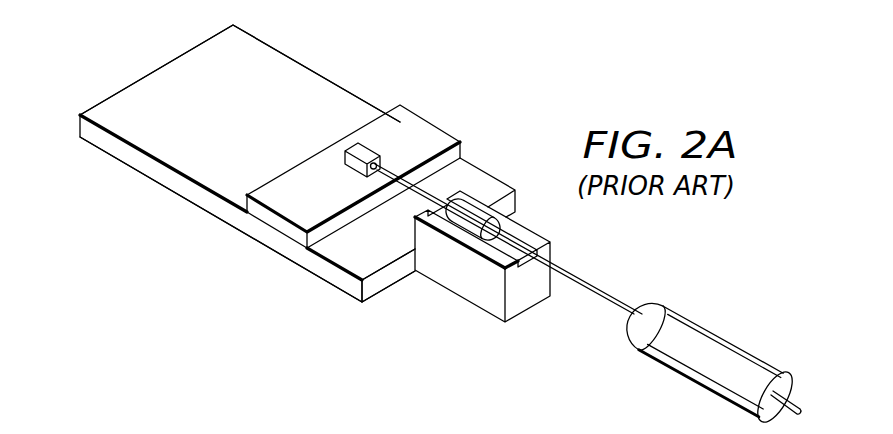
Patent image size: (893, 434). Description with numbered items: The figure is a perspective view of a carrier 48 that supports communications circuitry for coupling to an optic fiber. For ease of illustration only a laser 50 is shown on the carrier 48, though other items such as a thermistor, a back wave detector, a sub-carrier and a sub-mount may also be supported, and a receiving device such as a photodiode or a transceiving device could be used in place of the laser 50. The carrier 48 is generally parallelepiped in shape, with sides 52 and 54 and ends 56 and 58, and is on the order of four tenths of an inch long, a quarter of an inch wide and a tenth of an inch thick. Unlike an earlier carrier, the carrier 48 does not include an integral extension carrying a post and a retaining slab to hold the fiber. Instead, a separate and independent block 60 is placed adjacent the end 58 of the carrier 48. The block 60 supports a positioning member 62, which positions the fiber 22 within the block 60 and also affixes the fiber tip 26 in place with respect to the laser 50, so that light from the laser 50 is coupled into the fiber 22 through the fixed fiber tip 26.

The fiber 22 is at (591, 284).
The fiber tip 26 is at (382, 166).
The carrier 48 is at (174, 205).
The laser 50 is at (355, 163).
The side 52 is at (273, 234).
The side 54 is at (356, 85).
The end 56 is at (141, 66).
The end 58 is at (382, 281).
The block 60 is at (449, 287).
The positioning member 62 is at (482, 221).